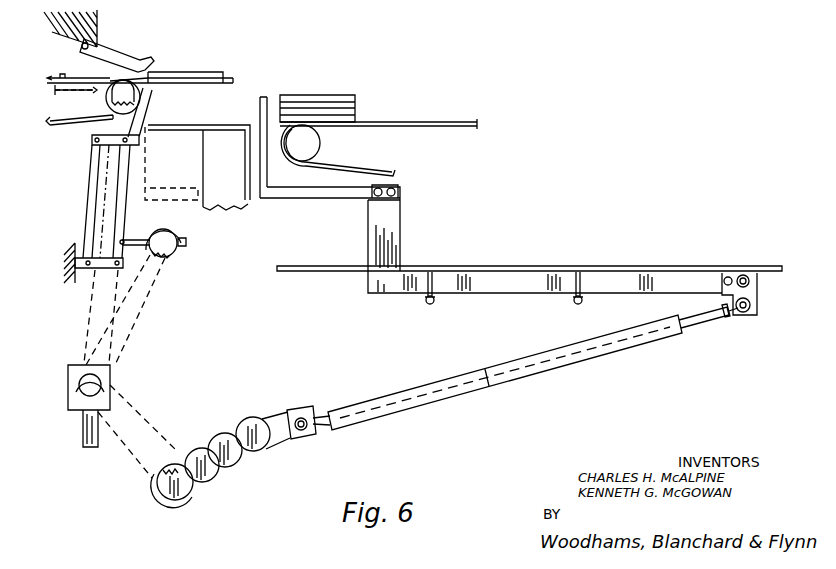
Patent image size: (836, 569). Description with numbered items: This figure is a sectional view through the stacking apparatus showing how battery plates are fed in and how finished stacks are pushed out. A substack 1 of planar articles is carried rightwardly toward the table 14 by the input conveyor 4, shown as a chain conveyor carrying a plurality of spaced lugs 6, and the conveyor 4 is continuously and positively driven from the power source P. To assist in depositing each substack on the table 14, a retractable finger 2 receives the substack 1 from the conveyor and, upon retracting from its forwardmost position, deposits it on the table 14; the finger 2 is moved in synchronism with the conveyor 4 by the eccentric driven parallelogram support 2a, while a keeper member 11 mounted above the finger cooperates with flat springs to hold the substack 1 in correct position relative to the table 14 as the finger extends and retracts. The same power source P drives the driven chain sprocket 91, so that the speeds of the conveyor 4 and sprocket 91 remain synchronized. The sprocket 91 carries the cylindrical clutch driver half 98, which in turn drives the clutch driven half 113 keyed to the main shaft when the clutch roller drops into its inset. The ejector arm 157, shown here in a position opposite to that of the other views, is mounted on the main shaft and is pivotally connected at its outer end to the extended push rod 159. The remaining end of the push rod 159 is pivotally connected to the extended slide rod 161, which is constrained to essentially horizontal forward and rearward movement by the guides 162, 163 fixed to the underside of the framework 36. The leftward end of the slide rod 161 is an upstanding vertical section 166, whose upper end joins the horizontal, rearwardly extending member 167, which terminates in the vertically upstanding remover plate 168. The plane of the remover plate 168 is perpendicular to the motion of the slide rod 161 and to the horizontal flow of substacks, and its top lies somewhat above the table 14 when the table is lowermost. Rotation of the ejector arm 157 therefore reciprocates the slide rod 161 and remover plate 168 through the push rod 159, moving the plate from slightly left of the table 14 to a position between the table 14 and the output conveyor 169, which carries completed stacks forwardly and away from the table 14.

The substack 1 is at (190, 73).
The finger 2 is at (229, 76).
The parallelogram support 2a is at (78, 206).
The input conveyor 4 is at (70, 134).
The lugs 6 is at (62, 74).
The keeper member 11 is at (107, 56).
The table 14 is at (210, 118).
The power source P is at (120, 371).
The framework 36 is at (717, 266).
The driven chain sprocket 91 is at (184, 493).
The clutch driver half 98 is at (211, 474).
The clutch driven half 113 is at (239, 460).
The ejector arm 157 is at (295, 437).
The push rod 159 is at (484, 378).
The slide rod 161 is at (519, 288).
The guide 162 is at (431, 304).
The guide 163 is at (579, 303).
The vertical section 166 is at (401, 216).
The horizontal member 167 is at (333, 194).
The remover plate 168 is at (264, 96).
The output conveyor 169 is at (462, 116).